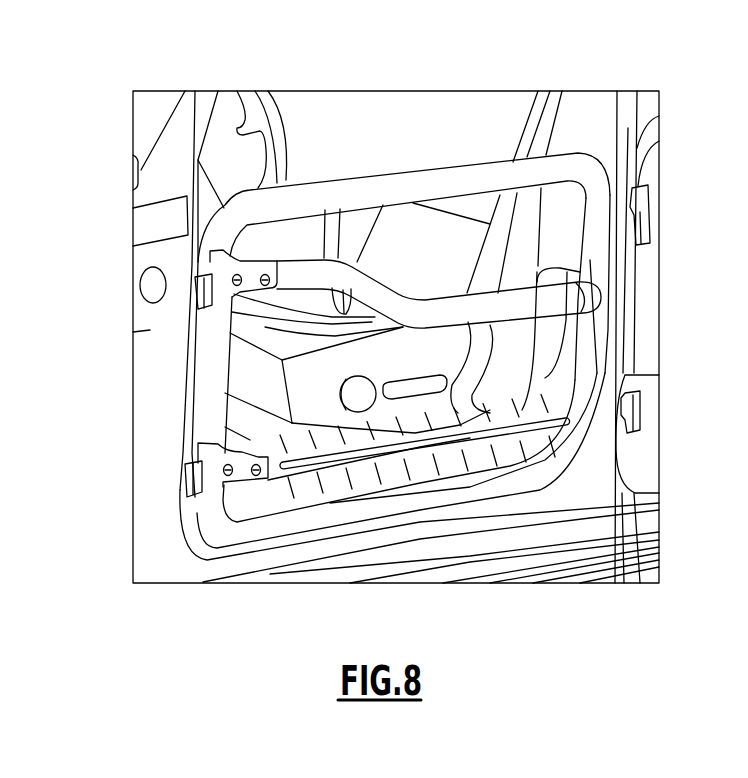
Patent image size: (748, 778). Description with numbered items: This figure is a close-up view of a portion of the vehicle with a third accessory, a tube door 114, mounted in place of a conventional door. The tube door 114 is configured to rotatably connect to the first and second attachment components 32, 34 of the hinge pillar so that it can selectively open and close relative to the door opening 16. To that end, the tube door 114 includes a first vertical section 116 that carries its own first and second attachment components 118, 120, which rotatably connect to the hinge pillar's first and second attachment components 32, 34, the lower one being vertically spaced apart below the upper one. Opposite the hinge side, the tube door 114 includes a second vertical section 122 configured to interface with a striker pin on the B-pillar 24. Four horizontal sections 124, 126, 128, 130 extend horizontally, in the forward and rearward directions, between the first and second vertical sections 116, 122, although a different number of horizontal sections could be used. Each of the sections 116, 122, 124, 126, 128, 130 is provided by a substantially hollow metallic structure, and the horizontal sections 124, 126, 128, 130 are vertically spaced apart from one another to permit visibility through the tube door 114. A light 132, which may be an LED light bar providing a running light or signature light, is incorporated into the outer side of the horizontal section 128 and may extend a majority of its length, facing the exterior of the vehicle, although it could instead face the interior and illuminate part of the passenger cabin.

The door opening 16 is at (394, 147).
The B-pillar 24 is at (603, 131).
The first attachment component 32 is at (183, 299).
The second attachment component 34 is at (170, 496).
The tube door 114 is at (454, 341).
The first vertical section 116 is at (217, 375).
The first attachment component 118 is at (213, 267).
The second attachment component 120 is at (213, 480).
The second vertical section 122 is at (595, 336).
The horizontal section 124 is at (474, 178).
The horizontal section 126 is at (567, 300).
The horizontal section 128 is at (537, 412).
The horizontal section 130 is at (425, 503).
The light 132 is at (542, 455).